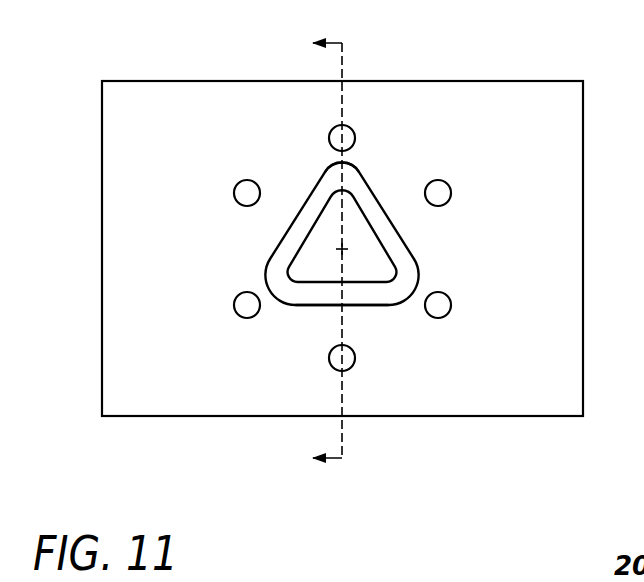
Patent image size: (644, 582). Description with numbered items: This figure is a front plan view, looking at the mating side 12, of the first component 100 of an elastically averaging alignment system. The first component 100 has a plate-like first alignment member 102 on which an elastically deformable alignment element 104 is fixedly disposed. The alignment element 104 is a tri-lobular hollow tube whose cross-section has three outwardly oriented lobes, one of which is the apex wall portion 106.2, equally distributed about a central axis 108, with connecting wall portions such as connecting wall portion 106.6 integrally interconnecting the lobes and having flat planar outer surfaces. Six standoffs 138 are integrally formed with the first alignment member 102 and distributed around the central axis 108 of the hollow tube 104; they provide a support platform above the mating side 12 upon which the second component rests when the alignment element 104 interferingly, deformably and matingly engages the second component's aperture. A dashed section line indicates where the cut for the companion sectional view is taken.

The first component 100 is at (317, 242).
The first alignment member 102 is at (178, 81).
The elastically deformable alignment element 104 is at (277, 247).
The outwardly oriented lobe 106.2 is at (345, 163).
The connecting wall portion 106.6 is at (370, 305).
The central axis 108 is at (346, 252).
The standoffs 138 is at (325, 363).
The mating side 12 is at (555, 128).